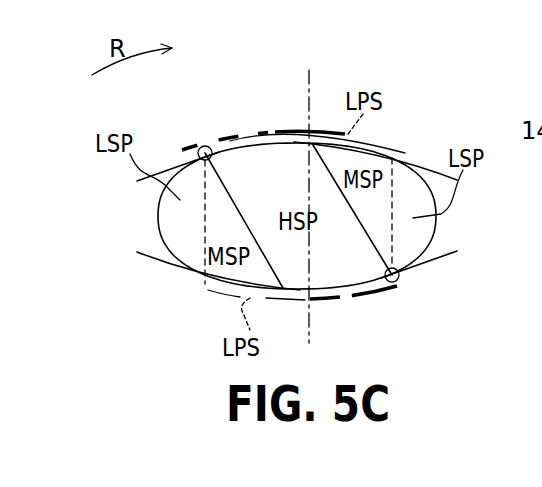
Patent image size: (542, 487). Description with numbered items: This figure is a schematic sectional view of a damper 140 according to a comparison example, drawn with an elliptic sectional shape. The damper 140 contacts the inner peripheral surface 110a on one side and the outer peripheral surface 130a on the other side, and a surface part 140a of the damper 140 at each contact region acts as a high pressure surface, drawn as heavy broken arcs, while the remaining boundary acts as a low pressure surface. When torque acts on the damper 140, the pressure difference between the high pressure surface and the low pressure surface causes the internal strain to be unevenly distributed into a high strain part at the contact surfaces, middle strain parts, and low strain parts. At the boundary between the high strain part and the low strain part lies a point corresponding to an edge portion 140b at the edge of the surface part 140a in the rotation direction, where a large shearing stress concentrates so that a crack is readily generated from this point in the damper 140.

The damper 140 is at (285, 157).
The surface part 140a is at (362, 328).
The edge portion 140b is at (198, 150).
The inner peripheral surface 110a is at (420, 172).
The outer peripheral surface 130a is at (148, 255).